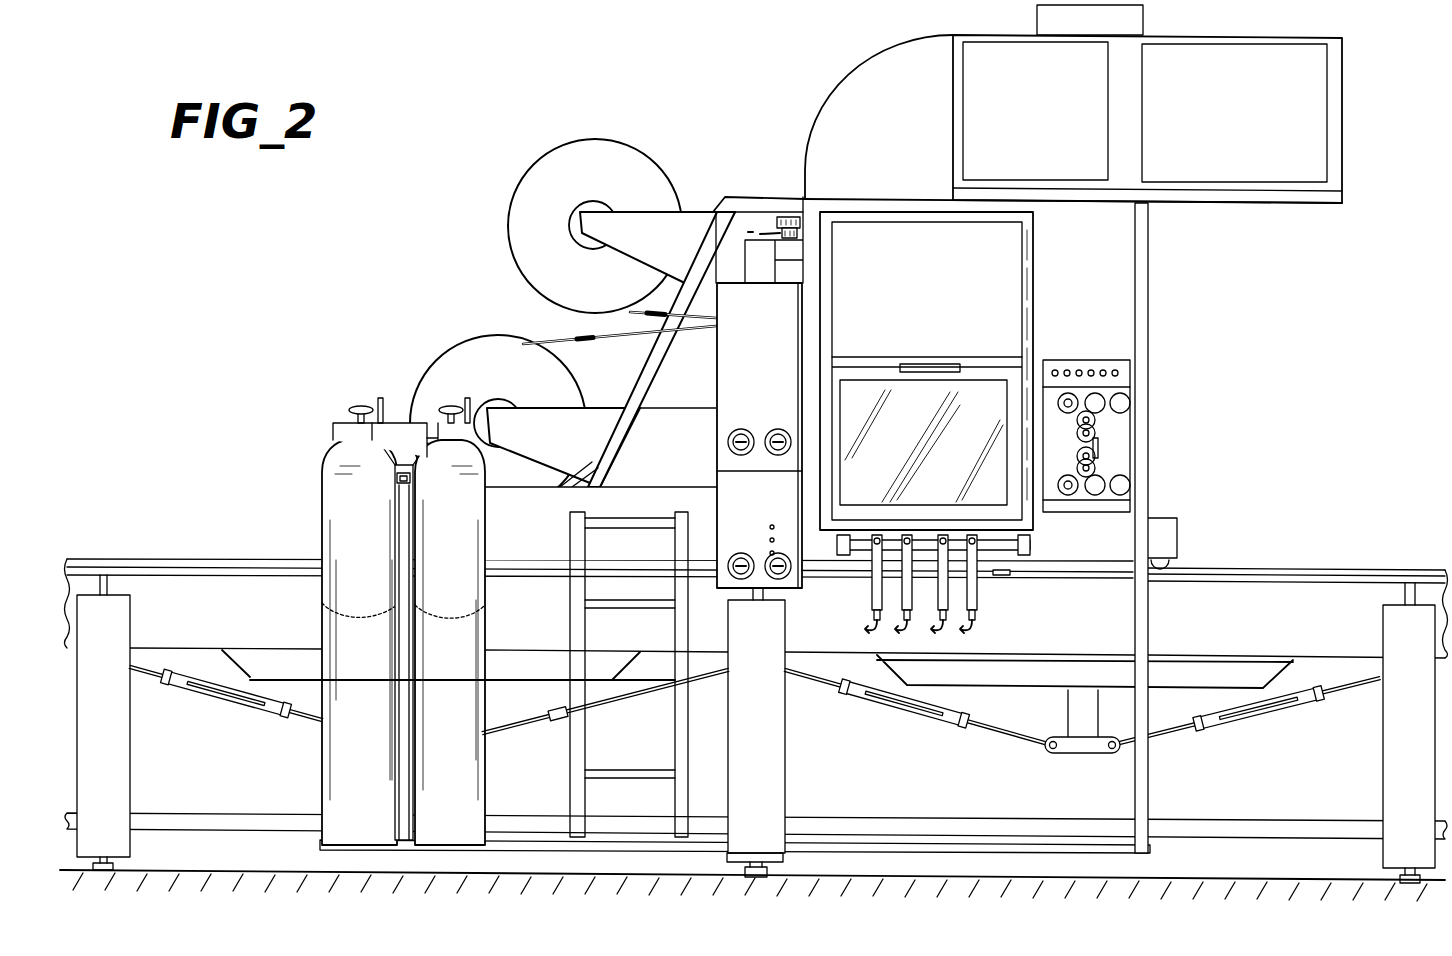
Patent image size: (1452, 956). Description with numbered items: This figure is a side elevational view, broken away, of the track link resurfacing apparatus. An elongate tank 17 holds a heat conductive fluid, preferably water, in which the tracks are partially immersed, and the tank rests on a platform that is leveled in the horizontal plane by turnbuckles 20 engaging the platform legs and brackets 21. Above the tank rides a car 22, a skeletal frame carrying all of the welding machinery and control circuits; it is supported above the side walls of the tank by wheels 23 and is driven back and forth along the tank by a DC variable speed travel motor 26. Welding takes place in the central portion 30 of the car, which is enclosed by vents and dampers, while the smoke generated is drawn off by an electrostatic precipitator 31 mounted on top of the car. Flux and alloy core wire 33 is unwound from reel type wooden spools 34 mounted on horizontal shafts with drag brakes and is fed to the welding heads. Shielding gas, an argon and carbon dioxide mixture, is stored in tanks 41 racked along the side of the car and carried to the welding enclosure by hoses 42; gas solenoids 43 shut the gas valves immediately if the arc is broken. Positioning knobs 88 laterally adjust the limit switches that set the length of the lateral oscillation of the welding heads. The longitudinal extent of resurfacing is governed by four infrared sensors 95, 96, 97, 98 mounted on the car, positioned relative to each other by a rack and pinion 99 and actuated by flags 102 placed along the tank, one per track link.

The tank 17 is at (243, 577).
The turnbuckles 20 is at (893, 710).
The brackets 21 is at (1082, 752).
The car 22 is at (1244, 388).
The wheels 23 is at (505, 560).
The travel motor 26 is at (340, 438).
The central portion 30 is at (1145, 283).
The electrostatic precipitator 31 is at (1043, 113).
The flux and alloy core wire 33 is at (555, 338).
The reel type wooden spools 34 is at (524, 186).
The tanks 41 is at (338, 502).
The hoses 42 is at (488, 455).
The gas solenoids 43 is at (787, 216).
The positioning knobs 88 is at (1090, 433).
The infrared sensor 95 is at (975, 602).
The infrared sensor 96 is at (940, 602).
The infrared sensor 97 is at (898, 602).
The infrared sensor 98 is at (872, 592).
The rack and pinion 99 is at (1005, 548).
The flags 102 is at (1000, 575).